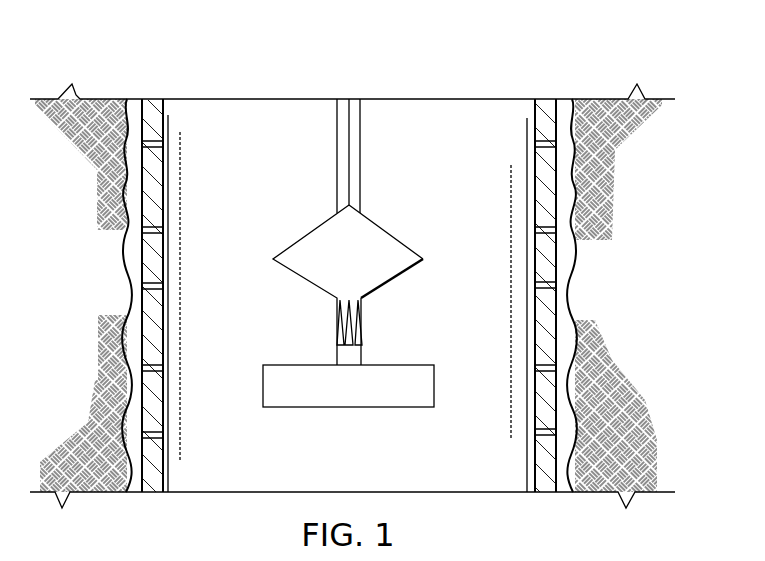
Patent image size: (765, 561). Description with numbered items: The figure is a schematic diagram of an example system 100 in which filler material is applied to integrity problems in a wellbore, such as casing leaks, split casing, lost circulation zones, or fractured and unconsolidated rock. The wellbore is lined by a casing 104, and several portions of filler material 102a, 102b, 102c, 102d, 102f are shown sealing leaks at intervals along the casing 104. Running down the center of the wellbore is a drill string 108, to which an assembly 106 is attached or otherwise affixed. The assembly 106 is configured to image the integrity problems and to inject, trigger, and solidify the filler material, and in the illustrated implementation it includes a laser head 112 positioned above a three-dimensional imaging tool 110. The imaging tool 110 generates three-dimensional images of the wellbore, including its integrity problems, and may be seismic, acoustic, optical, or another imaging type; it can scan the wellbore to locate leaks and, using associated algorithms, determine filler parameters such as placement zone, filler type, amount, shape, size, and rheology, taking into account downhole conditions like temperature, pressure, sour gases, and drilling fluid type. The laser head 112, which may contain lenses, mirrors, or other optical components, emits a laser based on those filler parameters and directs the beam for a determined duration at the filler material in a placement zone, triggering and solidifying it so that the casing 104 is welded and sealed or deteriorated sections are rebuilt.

The system 100 is at (598, 52).
The filler material 102a is at (152, 148).
The filler material 102b is at (152, 233).
The filler material 102c is at (152, 290).
The filler material 102d is at (152, 372).
The filler material 102f is at (152, 439).
The casing 104 is at (155, 107).
The assembly 106 is at (381, 328).
The drill string 108 is at (362, 155).
The 3D imaging tool 110 is at (348, 408).
The laser head 112 is at (386, 232).